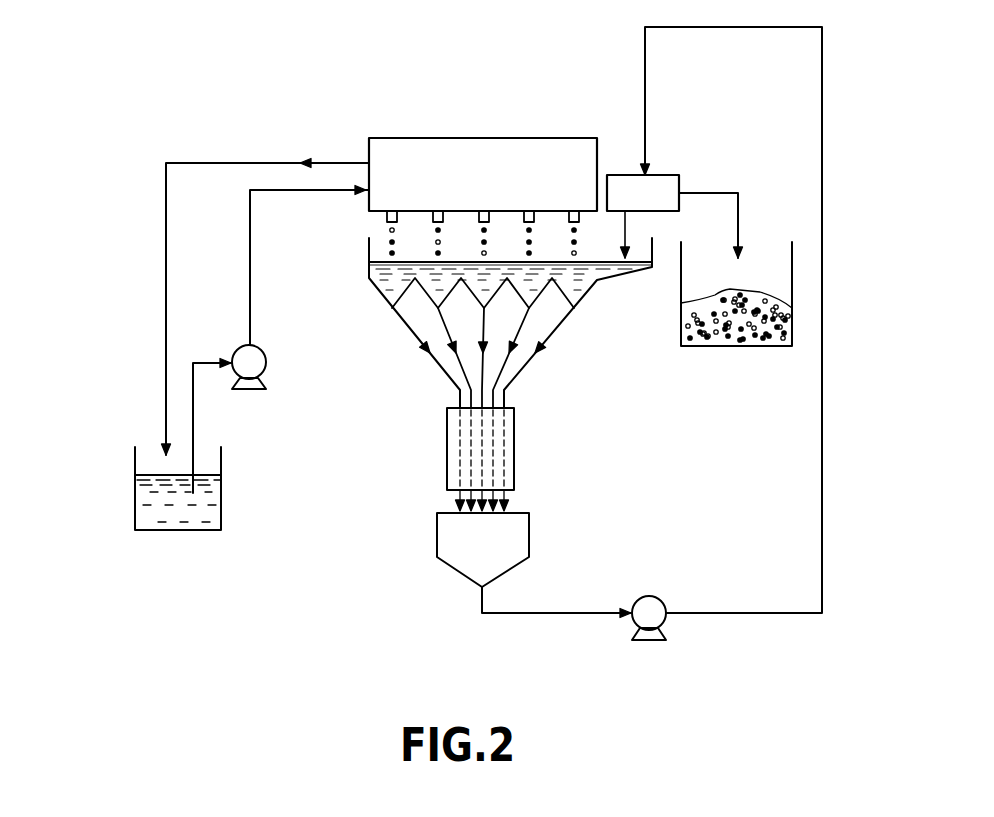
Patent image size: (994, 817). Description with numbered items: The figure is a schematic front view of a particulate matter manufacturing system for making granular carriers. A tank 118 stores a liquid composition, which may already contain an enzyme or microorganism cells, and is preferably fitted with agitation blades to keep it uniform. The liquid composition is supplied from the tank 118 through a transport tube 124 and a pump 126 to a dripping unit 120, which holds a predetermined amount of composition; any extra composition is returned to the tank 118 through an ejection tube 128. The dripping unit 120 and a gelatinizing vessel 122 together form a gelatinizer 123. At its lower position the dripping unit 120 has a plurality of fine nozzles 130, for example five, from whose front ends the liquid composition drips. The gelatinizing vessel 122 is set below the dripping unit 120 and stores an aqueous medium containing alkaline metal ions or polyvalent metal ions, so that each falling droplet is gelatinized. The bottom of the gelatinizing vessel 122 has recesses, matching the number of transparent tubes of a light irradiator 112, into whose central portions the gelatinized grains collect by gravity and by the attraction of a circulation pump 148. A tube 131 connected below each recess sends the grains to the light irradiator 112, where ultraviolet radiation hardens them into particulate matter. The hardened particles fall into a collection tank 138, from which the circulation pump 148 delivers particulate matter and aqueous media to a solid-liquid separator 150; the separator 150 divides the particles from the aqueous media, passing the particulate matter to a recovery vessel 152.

The light irradiator 112 is at (441, 468).
The tank 118 is at (133, 514).
The dripping unit 120 is at (470, 152).
The gelatinizing vessel 122 is at (622, 275).
The gelatinizer 123 is at (389, 108).
The transport tube 124 is at (194, 420).
The pump 126 is at (256, 360).
The ejection tube 128 is at (166, 313).
The fine nozzles 130 is at (385, 219).
The tube 131 is at (412, 338).
The collection tank 138 is at (455, 570).
The circulation pump 148 is at (652, 645).
The solid-liquid separator 150 is at (681, 165).
The recovery vessel 152 is at (783, 325).